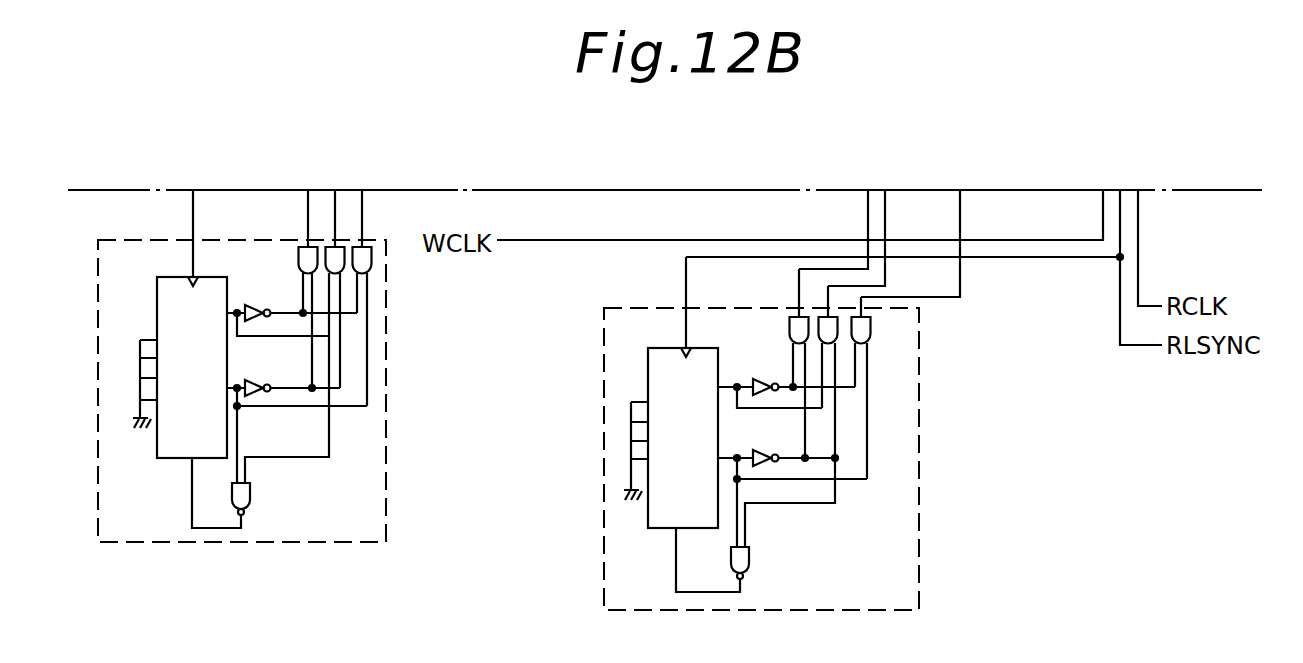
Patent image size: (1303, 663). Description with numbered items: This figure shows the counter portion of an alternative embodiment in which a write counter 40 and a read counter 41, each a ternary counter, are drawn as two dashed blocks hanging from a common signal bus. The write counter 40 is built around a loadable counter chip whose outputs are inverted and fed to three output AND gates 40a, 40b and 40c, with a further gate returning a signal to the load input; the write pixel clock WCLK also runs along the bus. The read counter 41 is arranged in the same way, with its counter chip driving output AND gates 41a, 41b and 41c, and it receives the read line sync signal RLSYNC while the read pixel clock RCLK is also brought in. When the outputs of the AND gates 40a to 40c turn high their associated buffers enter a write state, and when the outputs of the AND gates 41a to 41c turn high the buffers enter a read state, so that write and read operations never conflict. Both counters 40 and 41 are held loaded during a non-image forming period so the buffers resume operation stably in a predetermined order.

The write counter 40 is at (282, 366).
The output AND gate 40a is at (300, 263).
The output AND gate 40b is at (338, 272).
The output AND gate 40c is at (373, 266).
The read counter 41 is at (807, 400).
The output AND gate 41a is at (790, 333).
The output AND gate 41b is at (836, 338).
The output AND gate 41c is at (871, 334).